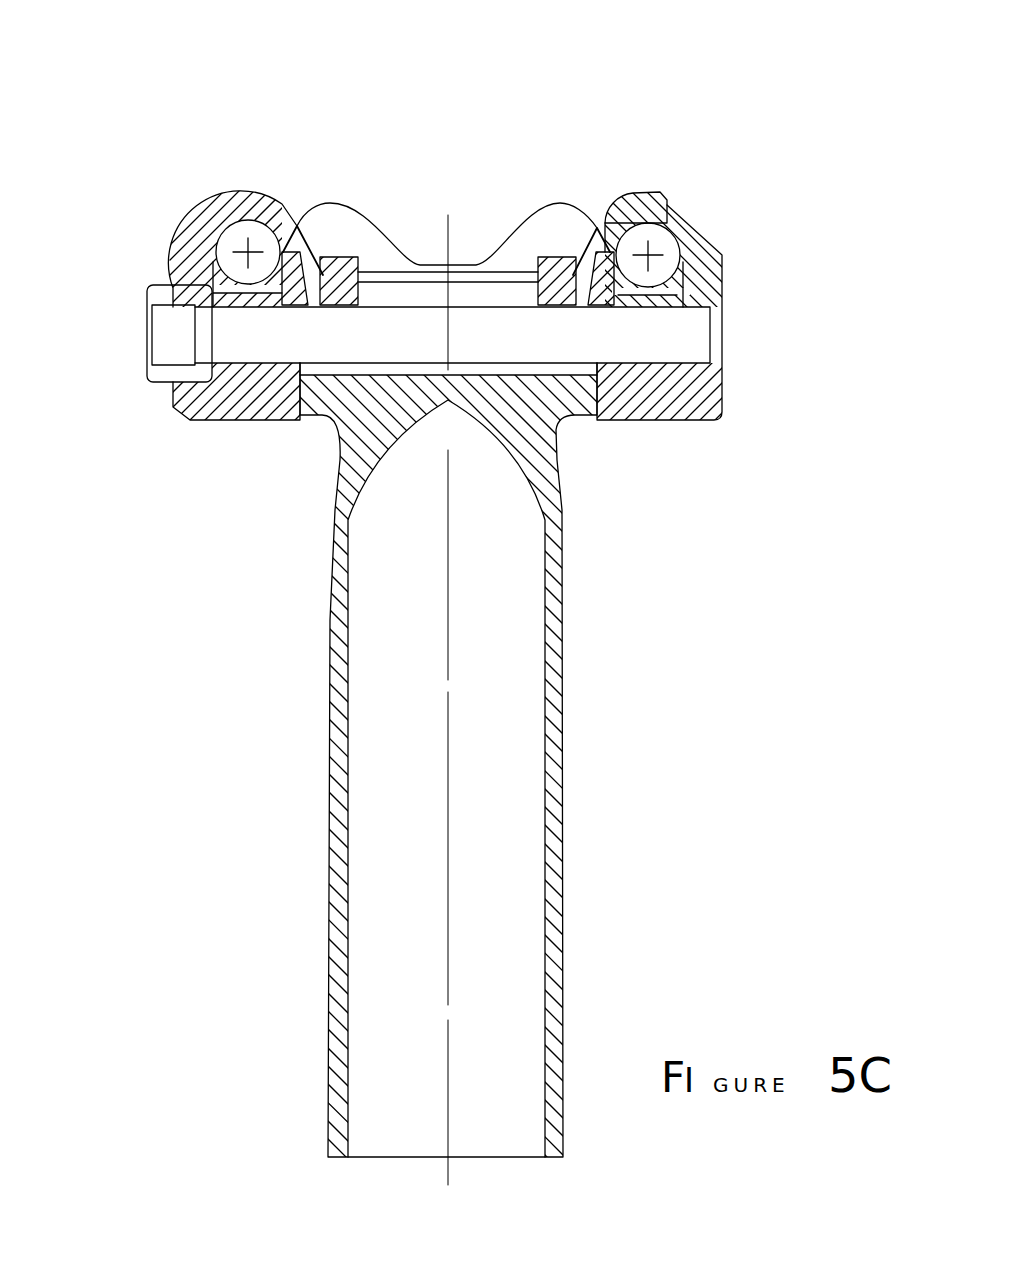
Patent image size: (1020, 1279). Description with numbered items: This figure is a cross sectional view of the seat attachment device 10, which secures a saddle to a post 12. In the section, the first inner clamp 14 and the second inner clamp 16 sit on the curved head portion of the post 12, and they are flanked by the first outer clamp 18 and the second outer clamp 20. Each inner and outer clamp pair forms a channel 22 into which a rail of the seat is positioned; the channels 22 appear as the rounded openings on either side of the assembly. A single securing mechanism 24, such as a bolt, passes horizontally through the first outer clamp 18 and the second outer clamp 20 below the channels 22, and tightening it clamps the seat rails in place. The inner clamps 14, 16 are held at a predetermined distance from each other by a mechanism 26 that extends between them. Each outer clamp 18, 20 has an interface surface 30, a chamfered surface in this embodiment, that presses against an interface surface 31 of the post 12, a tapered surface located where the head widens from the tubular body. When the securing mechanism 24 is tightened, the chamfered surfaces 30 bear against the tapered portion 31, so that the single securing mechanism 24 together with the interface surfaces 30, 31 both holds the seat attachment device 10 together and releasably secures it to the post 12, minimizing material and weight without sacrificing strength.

The seat attachment device 10 is at (756, 86).
The post 12 is at (345, 863).
The first inner clamp 14 is at (323, 277).
The second inner clamp 16 is at (573, 280).
The first outer clamp 18 is at (220, 398).
The second outer clamp 20 is at (660, 403).
The channel 22 is at (263, 240).
The securing mechanism 24 is at (162, 333).
The mechanism 26 is at (393, 275).
The interface surface 30 is at (322, 410).
The interface surface 31 is at (342, 412).